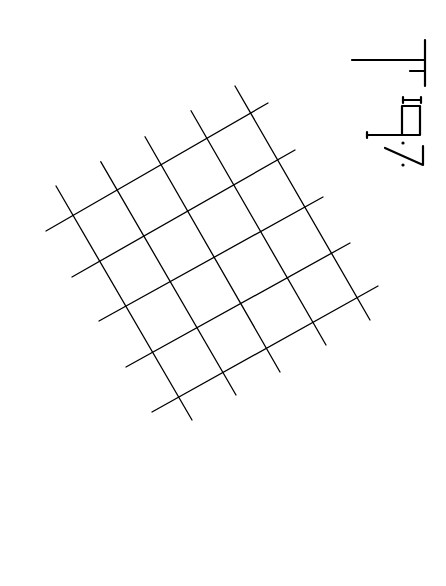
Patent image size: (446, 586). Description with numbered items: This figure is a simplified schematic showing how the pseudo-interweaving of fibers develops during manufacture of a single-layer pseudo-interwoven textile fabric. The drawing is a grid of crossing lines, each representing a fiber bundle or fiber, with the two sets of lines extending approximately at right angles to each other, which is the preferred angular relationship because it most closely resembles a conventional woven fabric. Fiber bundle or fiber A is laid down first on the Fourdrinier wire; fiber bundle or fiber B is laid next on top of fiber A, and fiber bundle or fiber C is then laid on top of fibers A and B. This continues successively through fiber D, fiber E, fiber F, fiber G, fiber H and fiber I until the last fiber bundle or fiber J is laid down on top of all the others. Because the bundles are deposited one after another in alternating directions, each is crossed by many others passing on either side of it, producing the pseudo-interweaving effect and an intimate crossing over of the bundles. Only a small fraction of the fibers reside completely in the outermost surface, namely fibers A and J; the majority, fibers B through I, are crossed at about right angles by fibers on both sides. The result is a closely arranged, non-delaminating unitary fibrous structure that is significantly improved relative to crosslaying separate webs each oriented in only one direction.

The fiber bundle or fiber H is at (268, 103).
The fiber bundle or fiber D is at (295, 150).
The fiber bundle or fiber B is at (323, 197).
The fiber bundle or fiber F is at (350, 243).
The fiber bundle or fiber J is at (378, 286).
The fiber bundle or fiber G is at (192, 420).
The fiber bundle or fiber C is at (236, 395).
The fiber bundle or fiber A is at (280, 372).
The fiber bundle or fiber E is at (326, 345).
The fiber bundle or fiber I is at (370, 320).